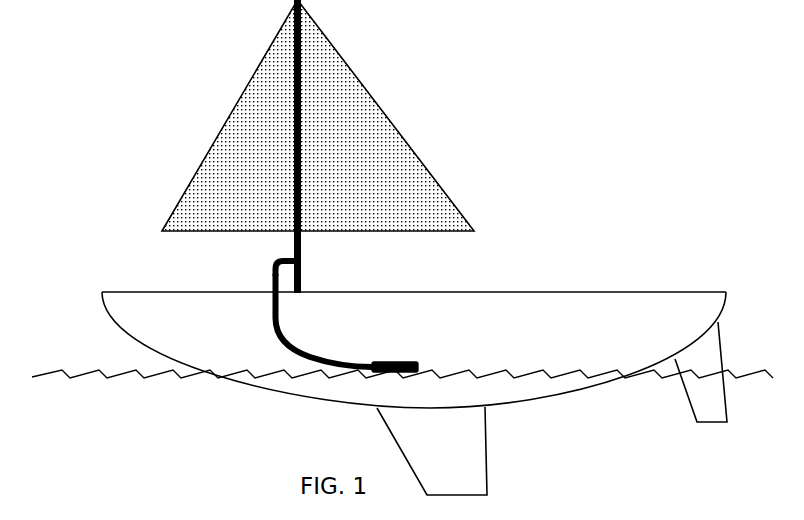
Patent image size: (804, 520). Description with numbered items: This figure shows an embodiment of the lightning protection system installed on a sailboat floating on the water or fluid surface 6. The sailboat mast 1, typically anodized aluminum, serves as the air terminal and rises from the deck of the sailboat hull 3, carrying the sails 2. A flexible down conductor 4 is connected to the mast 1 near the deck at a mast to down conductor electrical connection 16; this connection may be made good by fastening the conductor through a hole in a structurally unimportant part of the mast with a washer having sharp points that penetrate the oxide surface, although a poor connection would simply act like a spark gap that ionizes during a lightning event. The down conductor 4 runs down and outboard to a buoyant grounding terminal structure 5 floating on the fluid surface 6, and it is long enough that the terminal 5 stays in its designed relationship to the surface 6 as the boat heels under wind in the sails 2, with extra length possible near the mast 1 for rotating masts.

The mast 1 is at (312, 105).
The sails 2 is at (437, 157).
The sailboat hull 3 is at (572, 282).
The down conductor 4 is at (267, 317).
The buoyant grounding terminal structure 5 is at (405, 356).
The water or fluid surface 6 is at (60, 362).
The mast to down conductor electrical connection 16 is at (267, 259).